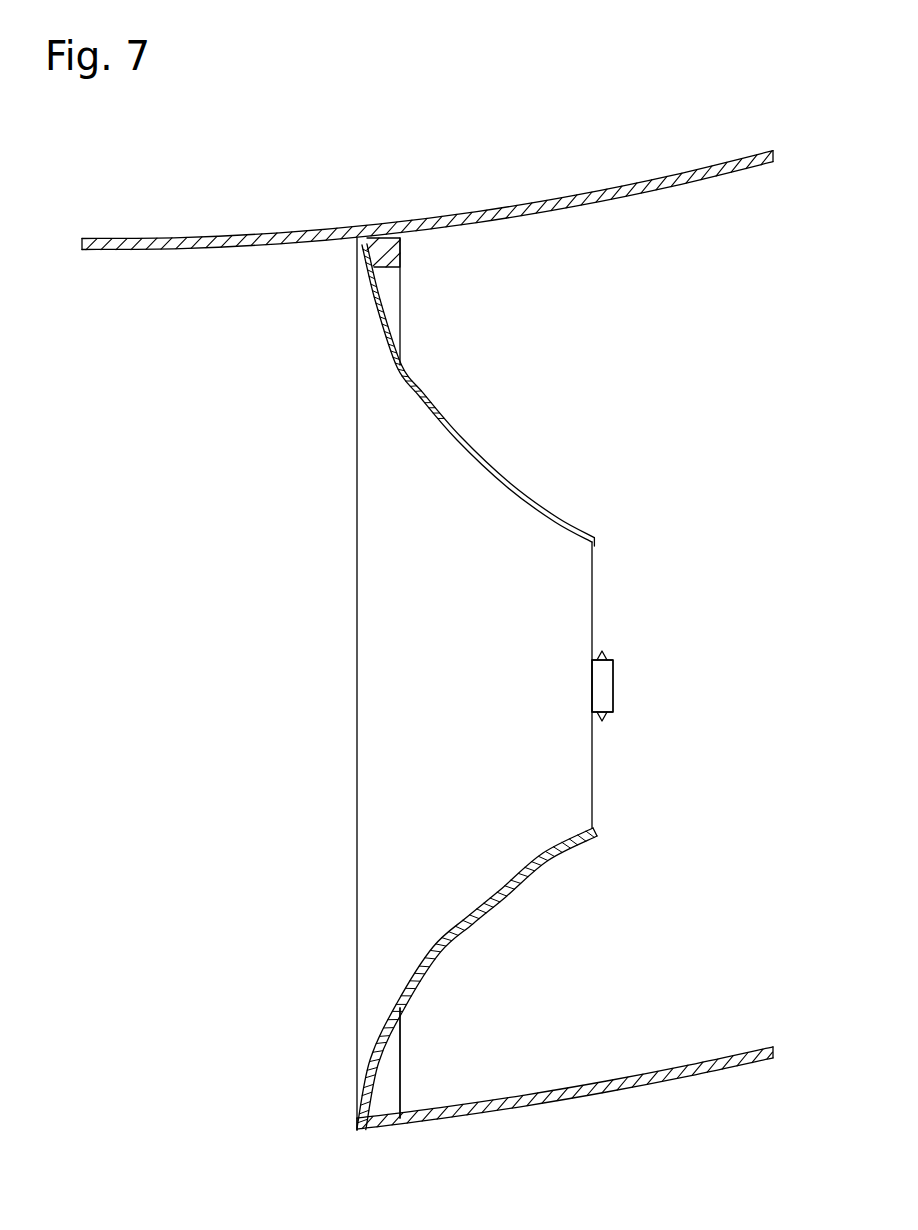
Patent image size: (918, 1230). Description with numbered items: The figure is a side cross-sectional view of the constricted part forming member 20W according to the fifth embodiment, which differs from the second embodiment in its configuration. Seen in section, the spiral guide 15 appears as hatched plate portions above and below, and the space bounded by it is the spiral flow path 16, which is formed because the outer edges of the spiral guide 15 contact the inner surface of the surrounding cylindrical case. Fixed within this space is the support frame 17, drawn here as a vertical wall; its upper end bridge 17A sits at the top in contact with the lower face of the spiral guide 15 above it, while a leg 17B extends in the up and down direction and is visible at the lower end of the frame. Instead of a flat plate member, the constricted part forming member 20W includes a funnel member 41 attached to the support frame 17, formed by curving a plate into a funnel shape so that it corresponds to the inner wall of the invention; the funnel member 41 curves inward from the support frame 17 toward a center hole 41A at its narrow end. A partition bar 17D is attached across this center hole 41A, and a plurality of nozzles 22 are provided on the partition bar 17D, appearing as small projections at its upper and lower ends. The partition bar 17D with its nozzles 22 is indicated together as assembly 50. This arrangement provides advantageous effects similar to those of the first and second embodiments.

The spiral guide 15 is at (726, 1075).
The spiral flow path 16 is at (636, 1042).
The support frame 17 is at (423, 288).
The upper end bridge 17A is at (402, 262).
The leg 17B is at (384, 1093).
The partition bar 17D is at (614, 684).
The nozzle 22 is at (602, 650).
The funnel member 41 is at (522, 452).
The center hole 41A is at (595, 558).
The locking mechanism 50 is at (640, 660).
The constricted part forming member 20W is at (458, 950).